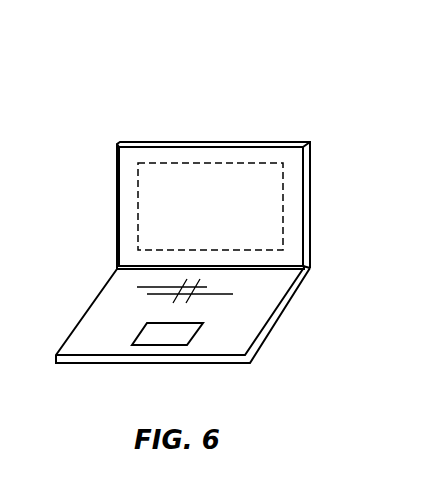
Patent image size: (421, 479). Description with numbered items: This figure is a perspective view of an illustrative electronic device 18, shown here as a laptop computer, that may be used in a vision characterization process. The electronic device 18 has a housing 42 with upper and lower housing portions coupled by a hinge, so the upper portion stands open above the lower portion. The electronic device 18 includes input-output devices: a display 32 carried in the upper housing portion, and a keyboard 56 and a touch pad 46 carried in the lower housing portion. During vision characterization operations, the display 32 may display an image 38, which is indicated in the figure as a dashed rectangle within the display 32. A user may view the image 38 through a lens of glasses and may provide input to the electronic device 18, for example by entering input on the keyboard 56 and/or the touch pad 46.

The electronic device 18 is at (306, 94).
The display 32 is at (294, 194).
The image 38 is at (205, 185).
The housing 42 is at (116, 197).
The keyboard 56 is at (223, 284).
The touch pad 46 is at (165, 337).